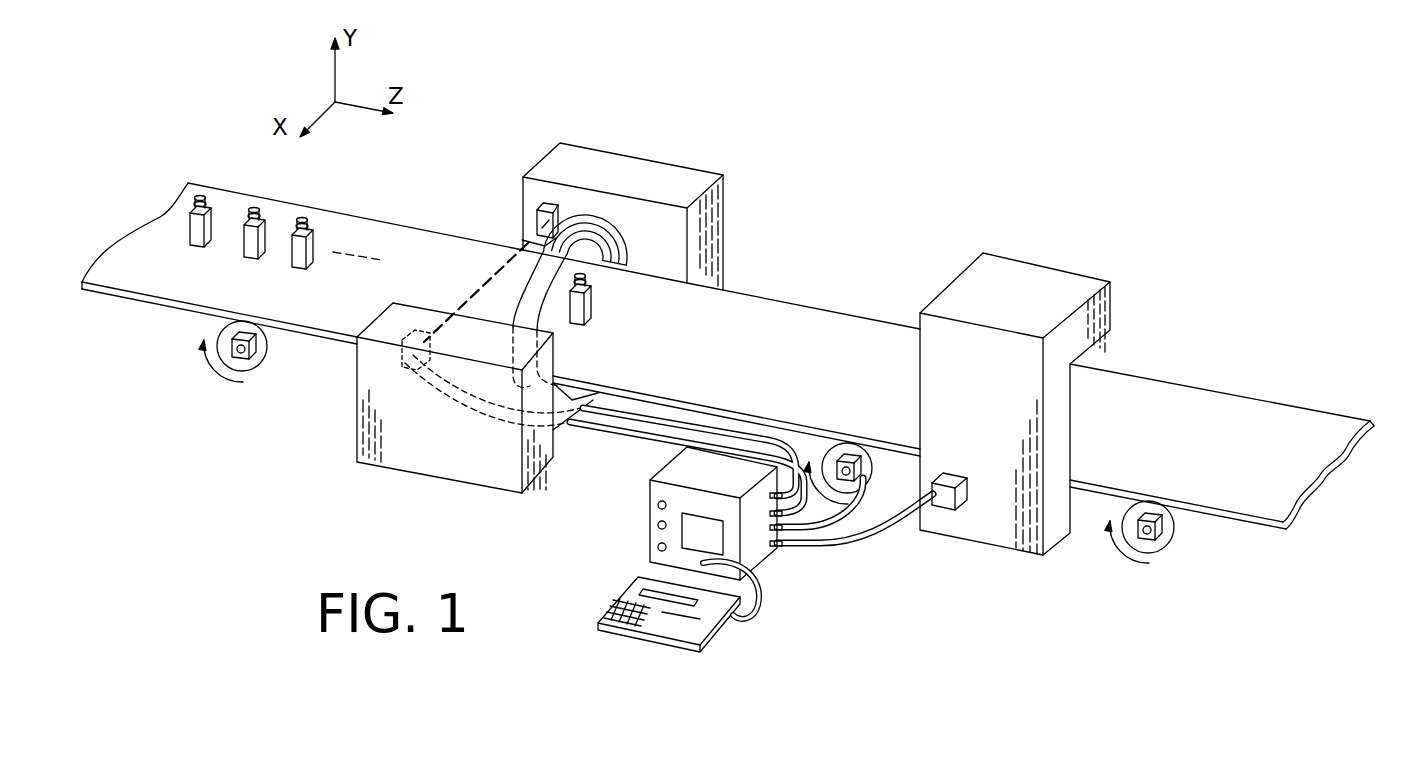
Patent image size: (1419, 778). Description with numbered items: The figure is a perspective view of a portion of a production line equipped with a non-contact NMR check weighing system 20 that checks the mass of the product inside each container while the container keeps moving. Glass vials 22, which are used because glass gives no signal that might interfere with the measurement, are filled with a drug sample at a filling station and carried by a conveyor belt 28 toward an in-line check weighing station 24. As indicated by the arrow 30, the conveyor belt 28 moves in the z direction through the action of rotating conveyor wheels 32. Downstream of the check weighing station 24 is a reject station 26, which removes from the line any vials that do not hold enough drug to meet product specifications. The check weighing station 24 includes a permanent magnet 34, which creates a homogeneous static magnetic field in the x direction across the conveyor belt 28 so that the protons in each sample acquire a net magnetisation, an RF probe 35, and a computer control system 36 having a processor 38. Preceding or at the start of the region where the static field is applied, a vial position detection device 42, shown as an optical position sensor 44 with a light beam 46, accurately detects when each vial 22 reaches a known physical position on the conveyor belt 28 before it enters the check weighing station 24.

The NMR check weighing system 20 is at (925, 178).
The glass vials 22 is at (260, 218).
The check weighing station 24 is at (766, 222).
The reject station 26 is at (962, 530).
The conveyor belt 28 is at (810, 320).
The arrow 30 is at (1388, 485).
The conveyor wheels 32 is at (260, 360).
The permanent magnet 34 is at (594, 165).
The RF probe 35 is at (618, 234).
The computer control system 36 is at (648, 523).
The processor 38 is at (757, 603).
The vial position detection device 42 is at (446, 283).
The optical position sensor 44 is at (537, 212).
The light beam 46 is at (484, 282).